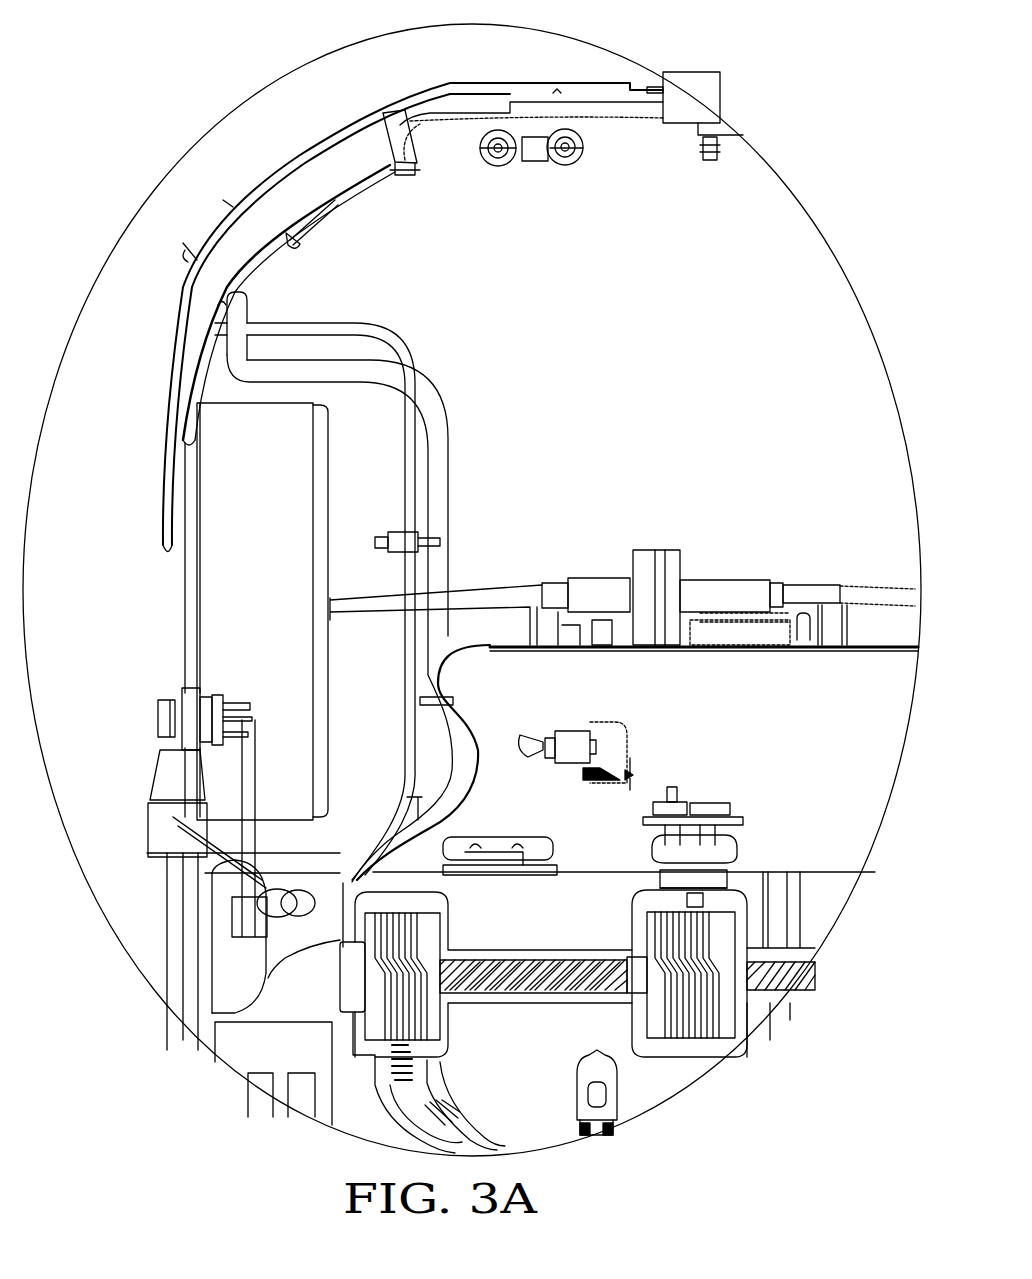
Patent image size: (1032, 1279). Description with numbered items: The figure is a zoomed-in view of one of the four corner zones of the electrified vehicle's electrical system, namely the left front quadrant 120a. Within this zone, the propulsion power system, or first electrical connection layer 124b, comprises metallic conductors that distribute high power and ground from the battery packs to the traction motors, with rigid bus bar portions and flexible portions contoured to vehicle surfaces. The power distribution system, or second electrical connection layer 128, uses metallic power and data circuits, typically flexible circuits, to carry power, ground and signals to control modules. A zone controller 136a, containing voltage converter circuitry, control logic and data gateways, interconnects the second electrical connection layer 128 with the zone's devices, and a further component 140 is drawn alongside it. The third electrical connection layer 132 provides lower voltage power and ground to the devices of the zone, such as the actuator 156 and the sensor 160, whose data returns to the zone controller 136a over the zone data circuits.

The left front quadrant 120a is at (307, 67).
The sensor 160 is at (533, 176).
The actuator 156 is at (170, 688).
The third electrical connection layer 132 is at (408, 793).
The zone controller 136a is at (430, 927).
The coil unit 140 is at (727, 923).
The second electrical connection layer 128 is at (560, 977).
The first electrical connection layer 124b is at (612, 1095).